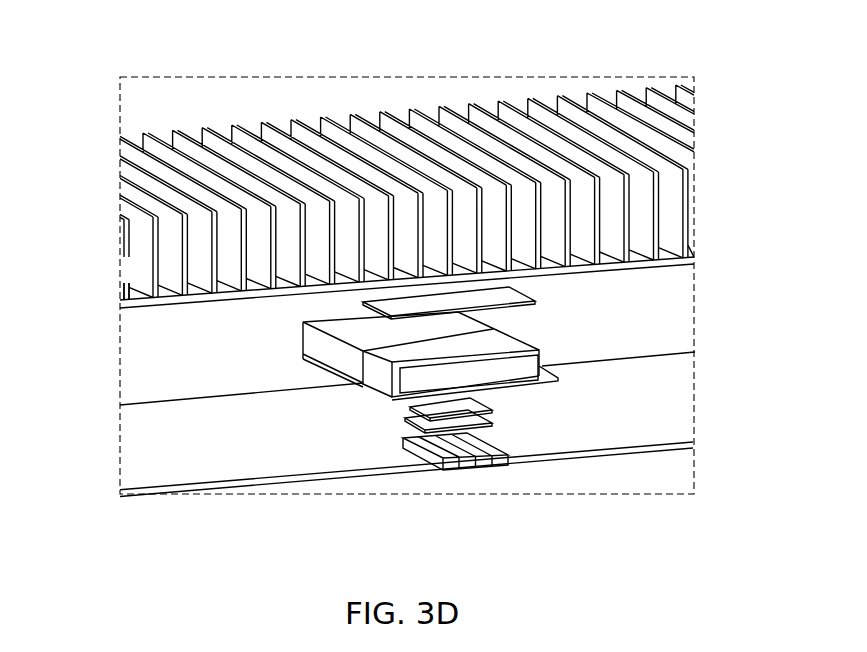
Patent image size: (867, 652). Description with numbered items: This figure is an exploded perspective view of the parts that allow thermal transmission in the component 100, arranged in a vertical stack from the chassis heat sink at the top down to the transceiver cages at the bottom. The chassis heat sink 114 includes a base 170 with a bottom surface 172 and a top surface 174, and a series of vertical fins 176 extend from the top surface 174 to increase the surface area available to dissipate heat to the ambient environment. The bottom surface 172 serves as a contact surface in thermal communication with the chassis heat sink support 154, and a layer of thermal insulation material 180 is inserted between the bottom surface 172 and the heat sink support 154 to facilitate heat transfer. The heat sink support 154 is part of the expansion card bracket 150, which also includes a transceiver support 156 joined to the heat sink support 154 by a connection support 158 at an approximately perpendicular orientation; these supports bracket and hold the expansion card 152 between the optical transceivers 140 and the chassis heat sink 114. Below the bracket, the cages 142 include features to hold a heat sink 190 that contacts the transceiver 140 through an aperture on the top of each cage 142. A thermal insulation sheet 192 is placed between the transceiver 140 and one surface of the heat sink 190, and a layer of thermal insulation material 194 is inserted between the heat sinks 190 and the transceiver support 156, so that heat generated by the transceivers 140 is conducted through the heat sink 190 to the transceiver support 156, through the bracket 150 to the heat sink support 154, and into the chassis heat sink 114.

The component 100 is at (138, 106).
The chassis heat sink 114 is at (120, 300).
The optical transceivers 140 is at (475, 460).
The cages 142 is at (507, 452).
The expansion card bracket 150 is at (382, 383).
The expansion card 152 is at (470, 332).
The chassis heat sink support 154 is at (505, 349).
The transceiver support 156 is at (413, 392).
The connection support 158 is at (373, 367).
The base 170 is at (157, 310).
The bottom surface 172 is at (183, 303).
The top surface 174 is at (683, 243).
The vertical fins 176 is at (415, 112).
The thermal insulation material 180 is at (522, 296).
The heat sink 190 is at (495, 420).
The thermal insulation sheet 192 is at (500, 455).
The thermal insulation material 194 is at (492, 405).